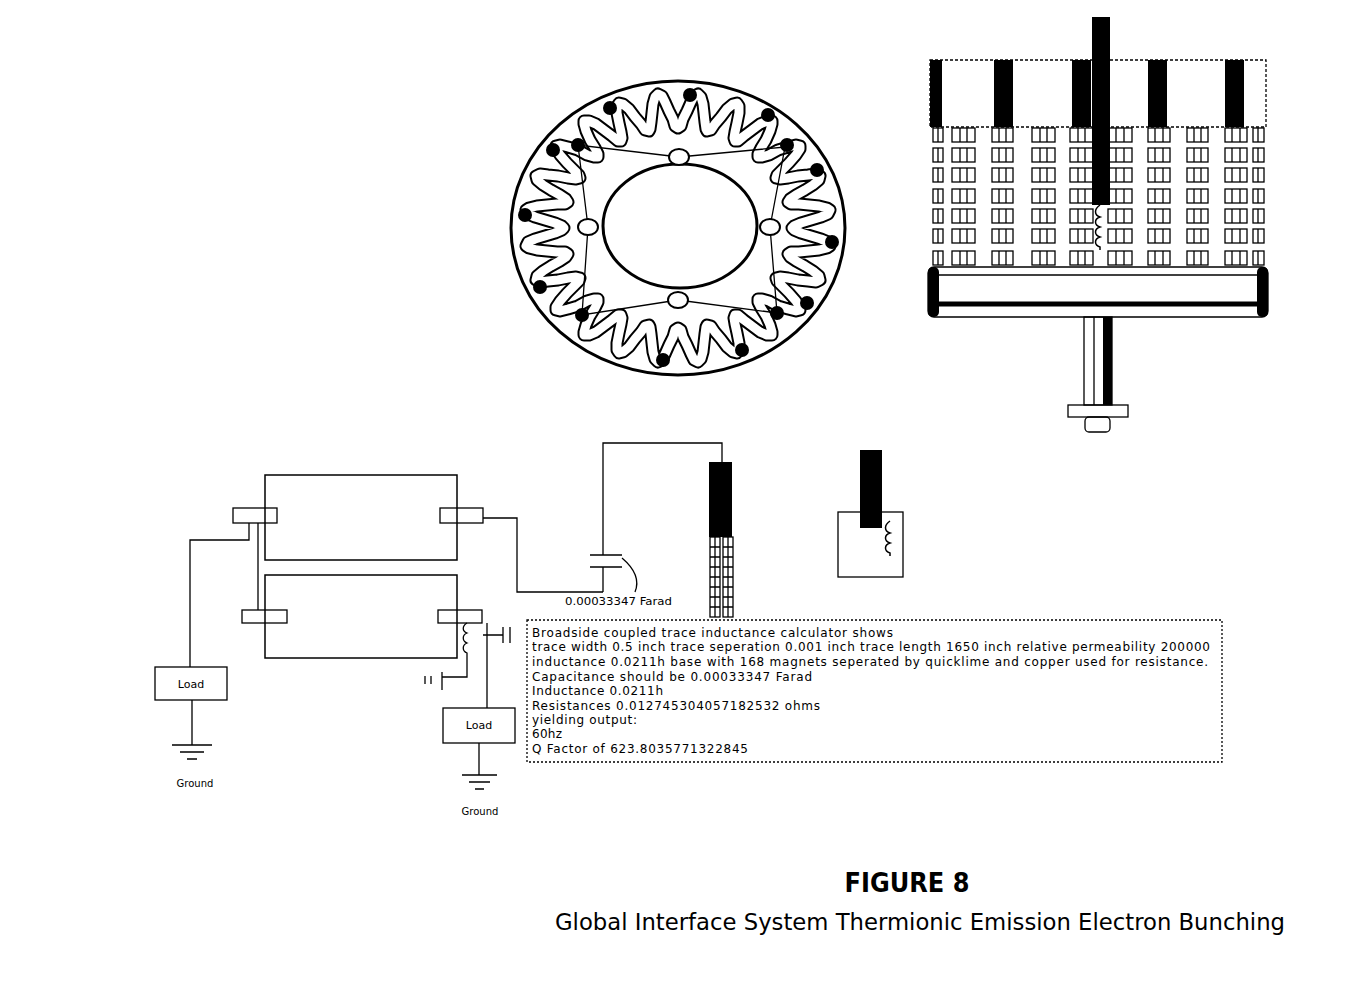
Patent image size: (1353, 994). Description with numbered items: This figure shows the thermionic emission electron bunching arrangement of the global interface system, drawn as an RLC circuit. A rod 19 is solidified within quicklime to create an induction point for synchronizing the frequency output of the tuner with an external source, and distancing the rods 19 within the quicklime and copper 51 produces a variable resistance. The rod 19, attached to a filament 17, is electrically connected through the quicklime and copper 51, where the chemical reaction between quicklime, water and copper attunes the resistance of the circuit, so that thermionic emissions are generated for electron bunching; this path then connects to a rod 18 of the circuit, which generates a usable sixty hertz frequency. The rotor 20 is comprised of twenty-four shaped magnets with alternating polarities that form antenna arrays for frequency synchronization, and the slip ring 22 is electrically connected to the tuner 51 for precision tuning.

The filament 17 is at (1097, 245).
The rod 18 is at (610, 107).
The rod 19 is at (685, 152).
The rotor 20 is at (806, 148).
The slip ring 22 is at (1068, 408).
The quicklime and copper 51 is at (390, 478).